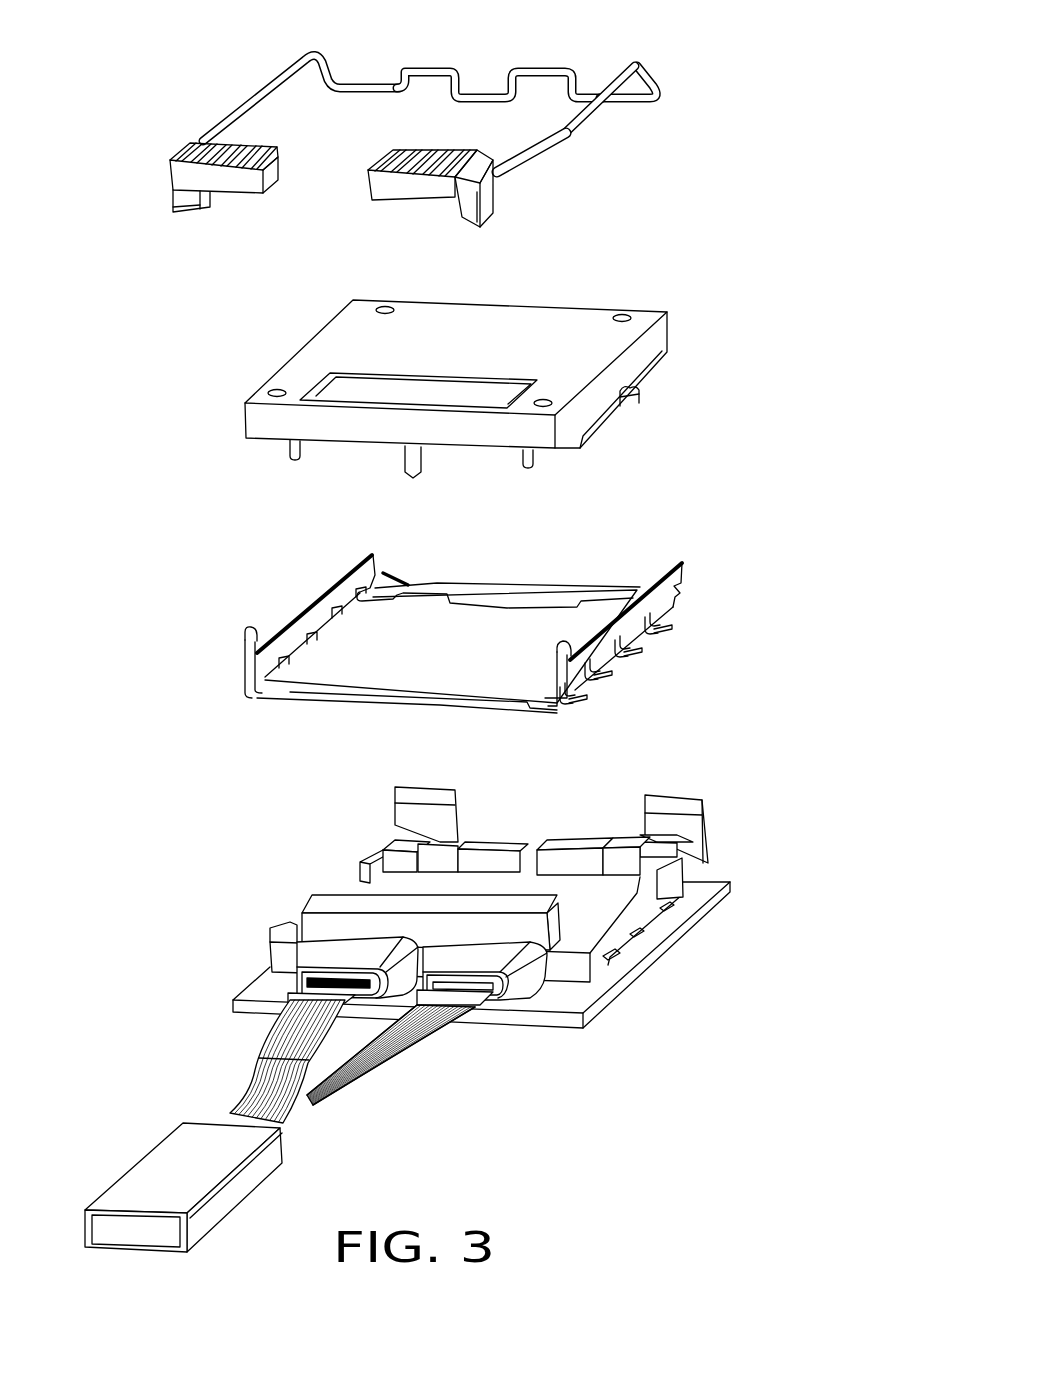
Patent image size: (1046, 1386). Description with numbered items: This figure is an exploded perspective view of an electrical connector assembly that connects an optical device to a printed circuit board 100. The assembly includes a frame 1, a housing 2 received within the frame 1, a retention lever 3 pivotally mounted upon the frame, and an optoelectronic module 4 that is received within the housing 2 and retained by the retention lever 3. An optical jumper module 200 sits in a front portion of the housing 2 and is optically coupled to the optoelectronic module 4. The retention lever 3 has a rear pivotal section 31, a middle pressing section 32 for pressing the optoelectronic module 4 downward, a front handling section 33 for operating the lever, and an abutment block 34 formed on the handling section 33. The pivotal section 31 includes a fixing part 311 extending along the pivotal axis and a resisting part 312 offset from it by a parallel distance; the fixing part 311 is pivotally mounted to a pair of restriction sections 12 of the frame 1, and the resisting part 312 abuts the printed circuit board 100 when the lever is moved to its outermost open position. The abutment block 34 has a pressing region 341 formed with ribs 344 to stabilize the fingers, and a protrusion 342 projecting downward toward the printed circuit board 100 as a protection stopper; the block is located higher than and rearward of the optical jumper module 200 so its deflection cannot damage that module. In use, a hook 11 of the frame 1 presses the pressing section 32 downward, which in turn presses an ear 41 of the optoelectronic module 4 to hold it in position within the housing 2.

The frame 1 is at (486, 636).
The housing 2 is at (700, 858).
The retention lever 3 is at (450, 148).
The optoelectronic module 4 is at (514, 384).
The hook 11 is at (247, 628).
The restriction section 12 is at (393, 575).
The rear pivotal section 31 is at (429, 70).
The middle pressing section 32 is at (590, 110).
The front handling section 33 is at (487, 200).
The abutment block 34 is at (412, 187).
The ear 41 is at (630, 400).
The printed circuit board 100 is at (663, 945).
The optical jumper module 200 is at (499, 993).
The fixing part 311 is at (368, 82).
The resisting part 312 is at (543, 75).
The pressing region 341 is at (224, 160).
The protrusion 342 is at (202, 204).
The ribs 344 is at (183, 147).